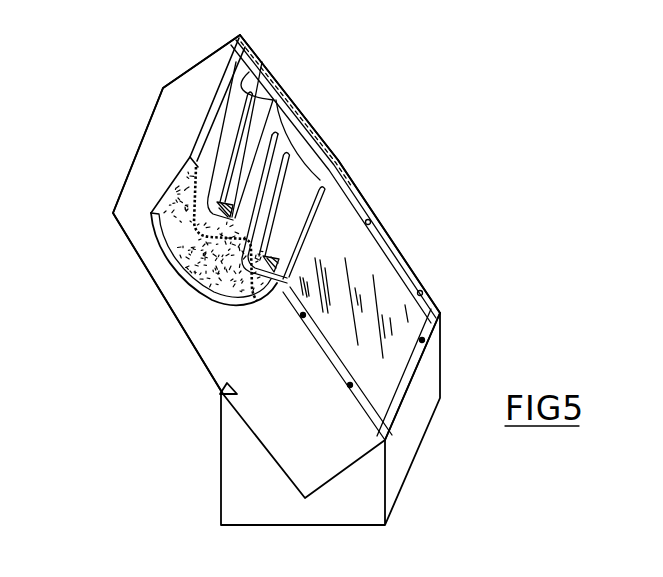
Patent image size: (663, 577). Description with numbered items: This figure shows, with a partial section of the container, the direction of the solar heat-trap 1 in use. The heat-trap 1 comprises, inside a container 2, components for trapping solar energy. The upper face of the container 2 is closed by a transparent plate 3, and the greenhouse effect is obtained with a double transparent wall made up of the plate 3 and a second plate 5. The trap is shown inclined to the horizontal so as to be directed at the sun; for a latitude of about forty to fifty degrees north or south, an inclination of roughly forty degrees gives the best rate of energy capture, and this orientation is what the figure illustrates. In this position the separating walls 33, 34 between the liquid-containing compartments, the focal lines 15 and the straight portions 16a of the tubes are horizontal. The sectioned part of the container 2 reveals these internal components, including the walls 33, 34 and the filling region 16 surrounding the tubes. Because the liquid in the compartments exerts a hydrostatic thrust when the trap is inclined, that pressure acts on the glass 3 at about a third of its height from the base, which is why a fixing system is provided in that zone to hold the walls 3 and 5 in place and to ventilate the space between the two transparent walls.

The solar heat-trap 1 is at (313, 82).
The container 2 is at (168, 148).
The transparent plate 3 is at (376, 272).
The second plate 5 is at (390, 308).
The focal lines 15 is at (219, 332).
The insulating foam filling 16 is at (233, 243).
The straight portions of the tubes 16a is at (229, 223).
The separating wall 33 is at (262, 135).
The separating wall 34 is at (282, 172).